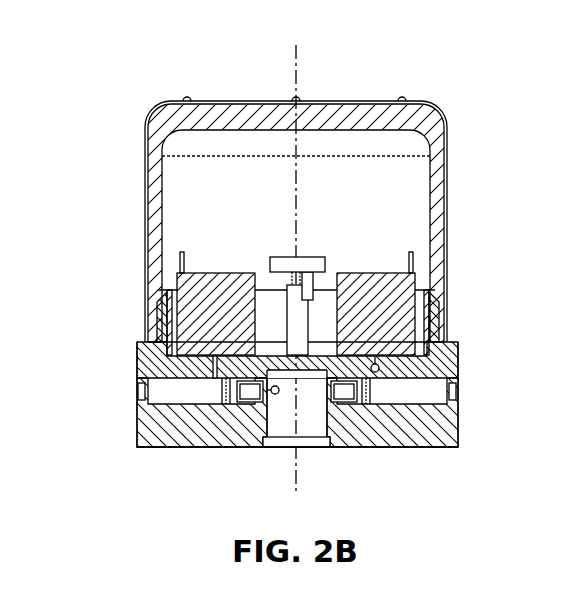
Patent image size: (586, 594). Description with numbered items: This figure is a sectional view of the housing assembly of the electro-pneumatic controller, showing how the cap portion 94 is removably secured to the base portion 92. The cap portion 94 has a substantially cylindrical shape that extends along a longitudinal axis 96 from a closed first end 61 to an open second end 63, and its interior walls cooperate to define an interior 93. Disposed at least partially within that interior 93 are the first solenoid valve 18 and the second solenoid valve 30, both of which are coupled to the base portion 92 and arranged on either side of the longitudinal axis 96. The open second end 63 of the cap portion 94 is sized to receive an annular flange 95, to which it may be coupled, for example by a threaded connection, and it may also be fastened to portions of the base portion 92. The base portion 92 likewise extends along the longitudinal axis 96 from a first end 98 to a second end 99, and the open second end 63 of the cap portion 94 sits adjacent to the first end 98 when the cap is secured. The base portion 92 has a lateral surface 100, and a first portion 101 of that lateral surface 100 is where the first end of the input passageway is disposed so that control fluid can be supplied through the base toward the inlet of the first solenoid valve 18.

The first solenoid valve 18 is at (218, 270).
The second solenoid valve 30 is at (383, 272).
The closed first end 61 is at (418, 108).
The open second end 63 is at (137, 345).
The base portion 92 is at (137, 437).
The interior 93 is at (390, 205).
The cap portion 94 is at (447, 160).
The annular flange 95 is at (442, 313).
The longitudinal axis 96 is at (298, 56).
The first end 98 is at (145, 338).
The second end 99 is at (413, 447).
The lateral surface 100 is at (137, 412).
The first portion 101 is at (137, 393).